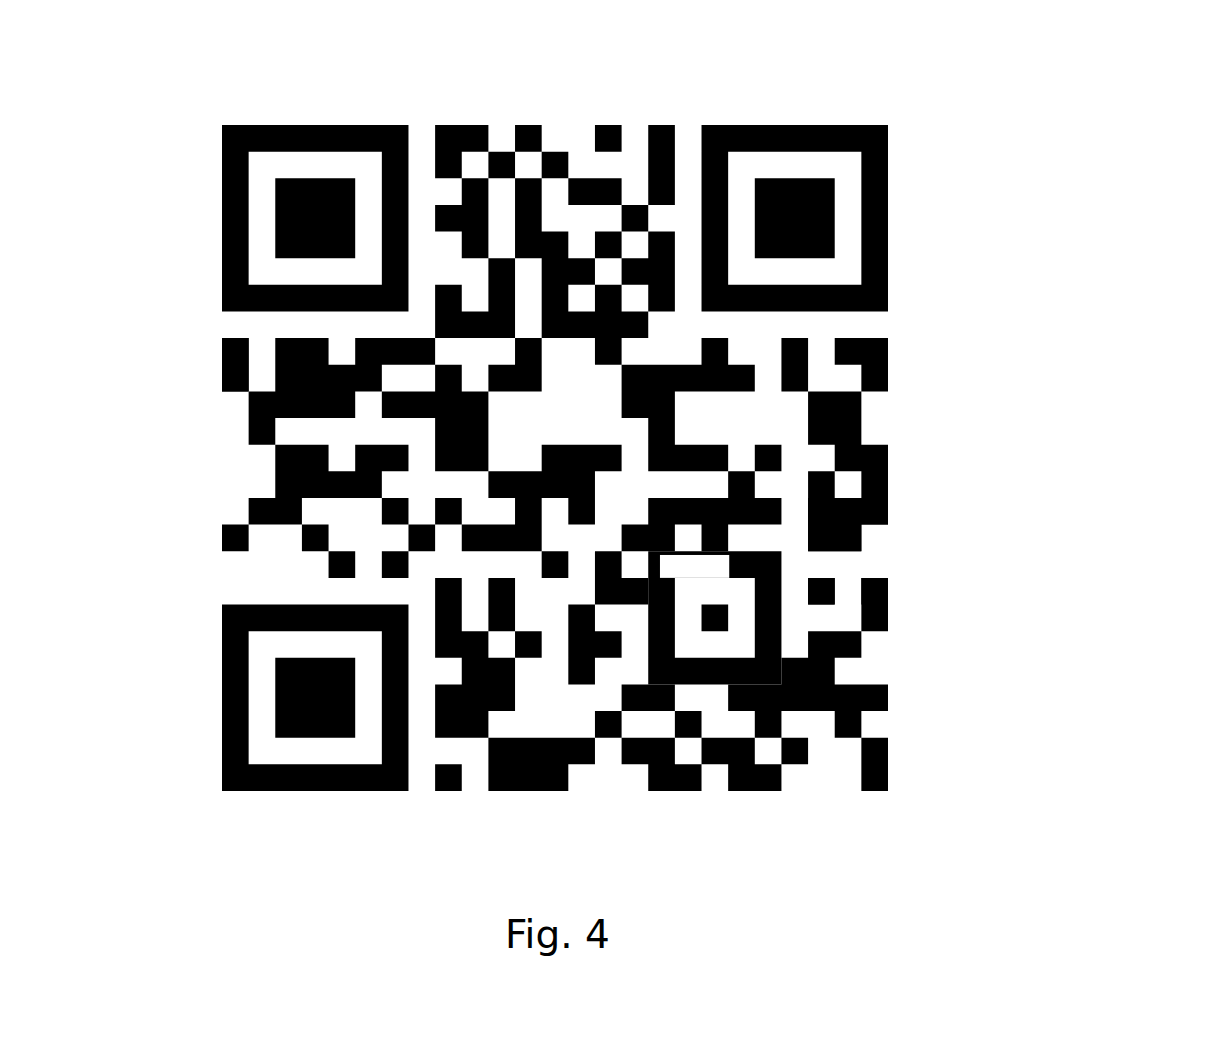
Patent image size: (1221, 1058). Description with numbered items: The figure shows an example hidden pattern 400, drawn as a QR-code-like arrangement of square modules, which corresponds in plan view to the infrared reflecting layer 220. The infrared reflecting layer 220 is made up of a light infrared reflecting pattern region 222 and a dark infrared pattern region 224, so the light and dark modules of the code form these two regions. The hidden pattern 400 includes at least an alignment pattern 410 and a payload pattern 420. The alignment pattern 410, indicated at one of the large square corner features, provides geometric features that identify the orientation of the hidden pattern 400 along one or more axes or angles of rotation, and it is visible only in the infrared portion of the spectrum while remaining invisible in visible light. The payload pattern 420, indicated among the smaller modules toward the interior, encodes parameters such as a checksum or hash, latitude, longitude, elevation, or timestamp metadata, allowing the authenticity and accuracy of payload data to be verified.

The hidden pattern 400 is at (1199, 61).
The infrared reflecting layer 220 is at (214, 104).
The alignment pattern 410 is at (340, 124).
The light infrared reflecting pattern region 222 is at (196, 380).
The dark infrared pattern region 224 is at (897, 542).
The payload pattern 420 is at (714, 617).